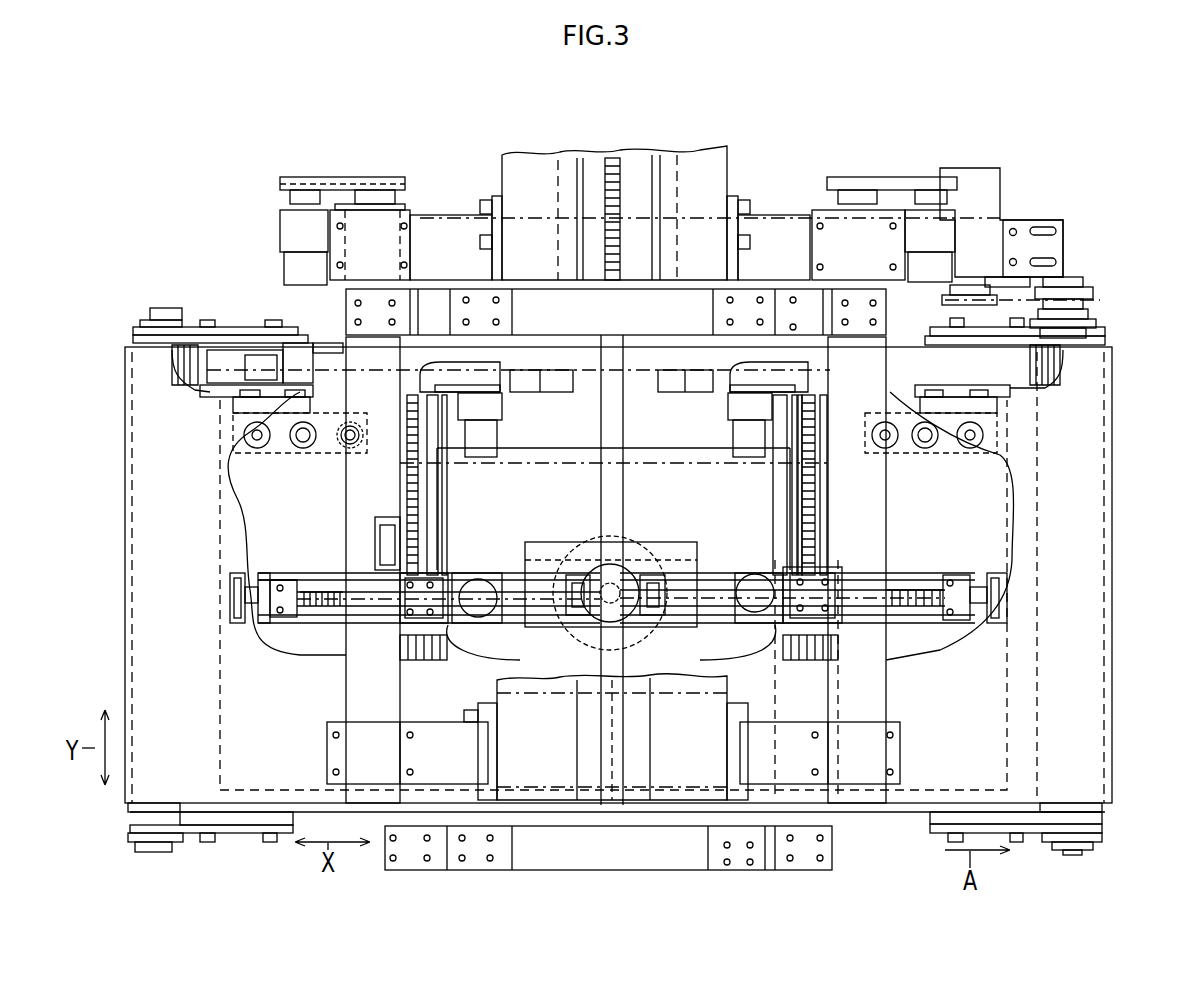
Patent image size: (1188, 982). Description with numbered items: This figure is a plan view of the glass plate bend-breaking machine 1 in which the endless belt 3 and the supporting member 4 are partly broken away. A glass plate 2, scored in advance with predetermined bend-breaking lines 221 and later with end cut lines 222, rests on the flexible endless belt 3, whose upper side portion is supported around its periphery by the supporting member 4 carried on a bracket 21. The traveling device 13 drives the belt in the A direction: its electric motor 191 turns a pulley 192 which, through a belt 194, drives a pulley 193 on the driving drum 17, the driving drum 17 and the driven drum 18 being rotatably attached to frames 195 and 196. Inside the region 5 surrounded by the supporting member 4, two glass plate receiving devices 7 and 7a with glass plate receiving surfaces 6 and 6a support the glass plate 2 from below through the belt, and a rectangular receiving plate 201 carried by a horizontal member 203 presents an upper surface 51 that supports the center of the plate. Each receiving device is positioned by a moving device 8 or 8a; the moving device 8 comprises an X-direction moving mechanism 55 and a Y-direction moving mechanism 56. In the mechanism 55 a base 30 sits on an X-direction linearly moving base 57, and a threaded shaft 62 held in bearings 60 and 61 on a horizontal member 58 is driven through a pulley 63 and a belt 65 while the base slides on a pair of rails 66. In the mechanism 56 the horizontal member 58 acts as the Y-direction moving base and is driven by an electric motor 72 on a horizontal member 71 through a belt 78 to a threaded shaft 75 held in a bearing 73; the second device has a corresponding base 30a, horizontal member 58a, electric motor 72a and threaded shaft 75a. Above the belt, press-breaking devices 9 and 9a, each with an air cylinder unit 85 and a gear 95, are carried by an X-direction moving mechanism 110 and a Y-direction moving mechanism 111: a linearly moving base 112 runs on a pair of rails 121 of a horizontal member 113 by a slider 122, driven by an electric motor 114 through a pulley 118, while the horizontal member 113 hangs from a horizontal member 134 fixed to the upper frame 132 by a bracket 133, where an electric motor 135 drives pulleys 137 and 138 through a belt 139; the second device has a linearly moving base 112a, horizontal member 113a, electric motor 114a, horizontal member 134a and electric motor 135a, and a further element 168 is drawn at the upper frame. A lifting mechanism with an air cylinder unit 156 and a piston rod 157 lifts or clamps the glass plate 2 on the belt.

The glass plate bend-breaking machine 1 is at (1116, 249).
The glass plate 2 is at (655, 445).
The flexible endless belt 3 is at (1085, 585).
The supporting member 4 is at (920, 803).
The region 5 is at (1035, 500).
The glass plate receiving surface 6 is at (481, 608).
The glass plate receiving surface 6a is at (757, 575).
The glass plate receiving device 7 is at (461, 631).
The glass plate receiving device 7a is at (748, 620).
The moving device 8 is at (316, 570).
The moving device 8a is at (897, 570).
The press-breaking device 9 is at (313, 456).
The press-breaking device 9a is at (961, 456).
The traveling device 13 is at (1038, 186).
The driving drum 17 is at (1102, 346).
The driven drum 18 is at (142, 815).
The bracket 21 is at (768, 289).
The base 30 is at (425, 625).
The nut block 30a is at (832, 600).
The upper surface 51 is at (675, 548).
The X-direction moving mechanism 55 is at (264, 575).
The Y-direction moving mechanism 56 is at (516, 409).
The X-direction linearly moving base 57 is at (400, 560).
The horizontal member 58 is at (515, 570).
The guide block 58a is at (912, 585).
The bearing 60 is at (286, 612).
The bearing 61 is at (580, 565).
The threaded shaft 62 is at (325, 590).
The pulley 63 is at (230, 595).
The belt 65 is at (250, 600).
The pair of rails 66 is at (295, 588).
The horizontal member 71 is at (470, 437).
The electric motor 72 is at (500, 415).
The electric motor 72a is at (658, 455).
The bearing 73 is at (352, 356).
The threaded shaft 75 is at (410, 472).
The Z-axis ball screw 75a is at (815, 492).
The belt 78 is at (490, 365).
The air cylinder unit 85 is at (362, 430).
The pulley or gear 95 is at (252, 455).
The X-direction moving mechanism 110 is at (205, 393).
The Y-direction moving mechanism 111 is at (265, 220).
The X-direction linearly moving base 112 is at (240, 405).
The support plate 112a is at (1040, 405).
The horizontal member 113 is at (558, 348).
The guide block 113a is at (668, 350).
The electric motor 114 is at (228, 362).
The electric motor 114a is at (1070, 365).
The pulley 118 is at (165, 362).
The pair of rails 121 is at (220, 400).
The slider 122 is at (300, 376).
The upper frame 132 is at (545, 190).
The bracket 133 is at (460, 232).
The horizontal member 134 is at (355, 688).
The column 134a is at (870, 694).
The electric motor 135 is at (295, 222).
The electric motor 135a is at (930, 225).
The pulley 137 is at (305, 176).
The pulley 138 is at (388, 183).
The belt 139 is at (345, 183).
The air cylinder unit 156 is at (625, 560).
The piston rod 157 is at (618, 598).
The ball screw 168 is at (625, 200).
The electric motor 191 is at (993, 192).
The pulley 192 is at (948, 305).
The pulley 193 is at (1095, 292).
The belt 194 is at (1040, 298).
The frame 195 is at (1035, 833).
The frame 196 is at (228, 830).
The rectangular receiving plate 201 is at (553, 545).
The horizontal member 203 is at (625, 410).
The predetermined bend-breaking lines 221 is at (700, 695).
The end cut lines 222 is at (780, 466).